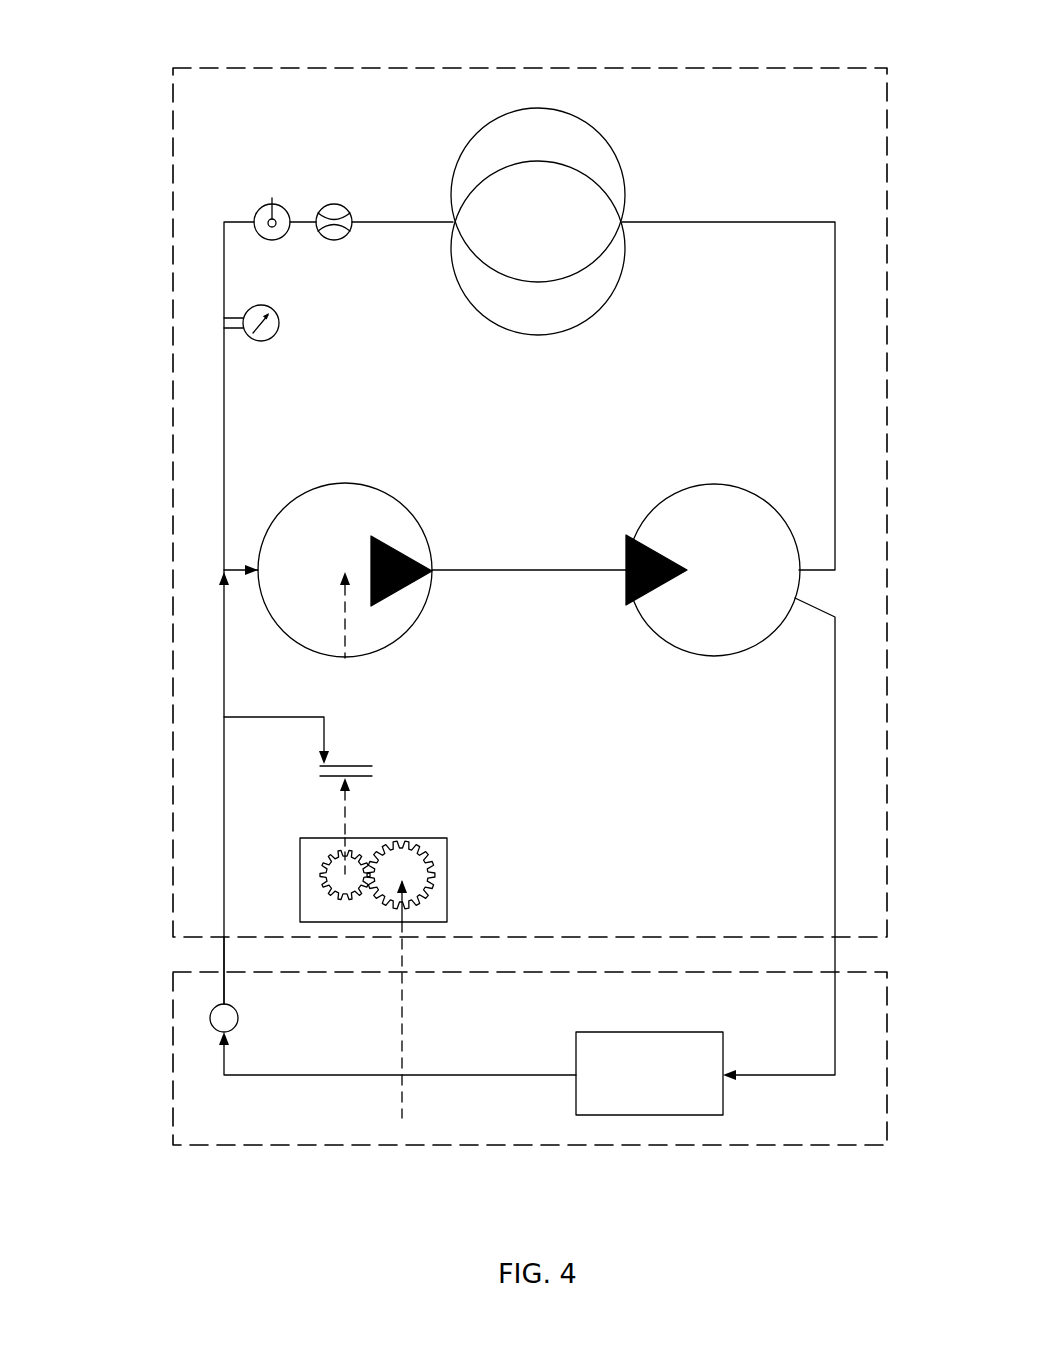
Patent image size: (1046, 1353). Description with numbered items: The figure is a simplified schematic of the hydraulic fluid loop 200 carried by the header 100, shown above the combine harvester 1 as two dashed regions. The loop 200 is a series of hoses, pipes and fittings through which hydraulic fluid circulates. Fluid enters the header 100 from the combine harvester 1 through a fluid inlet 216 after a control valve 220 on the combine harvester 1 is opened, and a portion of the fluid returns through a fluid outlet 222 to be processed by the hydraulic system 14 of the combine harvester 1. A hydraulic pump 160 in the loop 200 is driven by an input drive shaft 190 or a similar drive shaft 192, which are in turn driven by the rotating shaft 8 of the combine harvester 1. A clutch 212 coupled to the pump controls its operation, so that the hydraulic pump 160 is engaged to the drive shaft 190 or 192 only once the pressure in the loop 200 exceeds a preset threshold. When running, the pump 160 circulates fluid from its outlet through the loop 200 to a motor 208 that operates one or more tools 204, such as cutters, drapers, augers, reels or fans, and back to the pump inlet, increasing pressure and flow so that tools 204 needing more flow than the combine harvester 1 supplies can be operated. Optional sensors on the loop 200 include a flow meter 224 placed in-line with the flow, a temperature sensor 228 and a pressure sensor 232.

The header 100 is at (173, 95).
The combine harvester 1 is at (173, 1118).
The hydraulic fluid loop 200 is at (224, 465).
The tools 204 is at (482, 128).
The temperature sensor 228 is at (257, 210).
The flow meter 224 is at (317, 211).
The pressure sensor 232 is at (225, 313).
The hydraulic pump 160 is at (258, 543).
The motor 208 is at (790, 528).
The clutch 212 is at (318, 770).
The input drive shaft 190 is at (344, 823).
The drive shaft 192 is at (401, 875).
The rotating shaft 8 is at (402, 1090).
The fluid inlet 216 is at (224, 928).
The control valve 220 is at (210, 1020).
The fluid outlet 222 is at (835, 855).
The hydraulic system 14 is at (697, 1115).